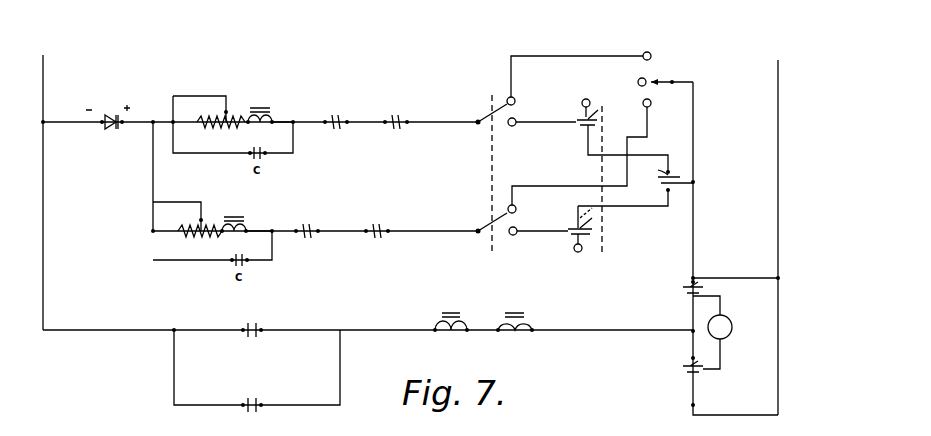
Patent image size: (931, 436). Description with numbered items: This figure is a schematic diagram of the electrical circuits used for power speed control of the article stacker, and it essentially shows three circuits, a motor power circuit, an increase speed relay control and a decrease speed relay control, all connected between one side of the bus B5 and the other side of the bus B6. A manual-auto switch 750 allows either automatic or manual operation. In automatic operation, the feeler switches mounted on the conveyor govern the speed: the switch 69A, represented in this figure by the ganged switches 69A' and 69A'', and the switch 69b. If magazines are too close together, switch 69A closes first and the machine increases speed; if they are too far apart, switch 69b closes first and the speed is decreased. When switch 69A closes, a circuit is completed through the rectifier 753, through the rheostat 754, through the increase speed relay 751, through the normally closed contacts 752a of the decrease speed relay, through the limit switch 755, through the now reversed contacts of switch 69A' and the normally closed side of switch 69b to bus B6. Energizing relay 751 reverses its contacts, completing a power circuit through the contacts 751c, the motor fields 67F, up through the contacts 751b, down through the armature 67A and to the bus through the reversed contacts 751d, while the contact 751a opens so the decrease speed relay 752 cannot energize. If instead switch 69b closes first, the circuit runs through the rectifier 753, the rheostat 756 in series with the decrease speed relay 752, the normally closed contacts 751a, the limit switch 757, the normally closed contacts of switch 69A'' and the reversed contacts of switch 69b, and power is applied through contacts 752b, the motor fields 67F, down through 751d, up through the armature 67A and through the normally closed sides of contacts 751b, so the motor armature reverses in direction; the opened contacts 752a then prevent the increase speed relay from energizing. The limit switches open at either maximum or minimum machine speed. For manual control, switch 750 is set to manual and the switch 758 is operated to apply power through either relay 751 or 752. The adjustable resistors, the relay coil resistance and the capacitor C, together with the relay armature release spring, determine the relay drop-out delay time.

The bus B5 is at (43, 72).
The bus B6 is at (778, 95).
The rectifier 753 is at (108, 132).
The rheostat 754 is at (228, 125).
The increase speed relay 751 is at (257, 114).
The rheostat 756 is at (180, 240).
The decrease speed relay 752 is at (224, 204).
The normally closed contacts of the decrease speed relay 752a is at (324, 118).
The limit switch 755 is at (384, 136).
The normally closed contacts 751a is at (303, 222).
The limit switch 757 is at (373, 244).
The manual-auto switch 750 is at (492, 176).
The switch 69A' is at (619, 126).
The switch 69A is at (579, 180).
The switch 69A'' is at (612, 234).
The switch 69b is at (688, 178).
The switch 758 is at (664, 78).
The contacts 751b is at (682, 292).
The armature 67A is at (728, 338).
The contacts 751d is at (680, 370).
The contacts 751c is at (256, 325).
The contacts 752b is at (256, 400).
The motor fields 67F is at (536, 320).